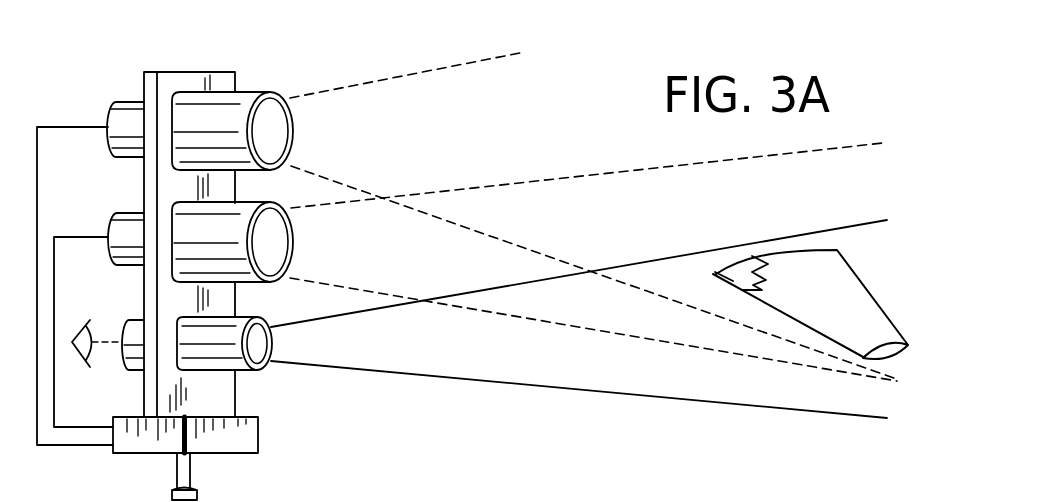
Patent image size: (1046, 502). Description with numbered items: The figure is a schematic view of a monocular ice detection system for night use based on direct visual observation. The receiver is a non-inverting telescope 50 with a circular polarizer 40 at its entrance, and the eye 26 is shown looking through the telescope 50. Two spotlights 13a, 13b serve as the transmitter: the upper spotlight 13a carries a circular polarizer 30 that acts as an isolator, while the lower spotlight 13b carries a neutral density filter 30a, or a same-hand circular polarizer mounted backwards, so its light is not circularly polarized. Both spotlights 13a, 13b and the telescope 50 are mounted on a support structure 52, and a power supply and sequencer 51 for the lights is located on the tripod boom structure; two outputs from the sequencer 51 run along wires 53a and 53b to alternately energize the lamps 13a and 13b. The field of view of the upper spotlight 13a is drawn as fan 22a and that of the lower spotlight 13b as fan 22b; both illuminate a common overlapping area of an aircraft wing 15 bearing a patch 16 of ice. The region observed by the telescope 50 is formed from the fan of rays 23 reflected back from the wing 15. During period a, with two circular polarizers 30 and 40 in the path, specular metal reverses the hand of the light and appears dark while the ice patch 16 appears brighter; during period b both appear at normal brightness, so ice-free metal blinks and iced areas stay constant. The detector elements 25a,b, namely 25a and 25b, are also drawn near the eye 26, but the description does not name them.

The support structure 52 is at (170, 64).
The upper spotlight 13a is at (125, 110).
The lower spotlight 13b is at (108, 247).
The wire 53a is at (40, 130).
The wire 53b is at (67, 237).
The eye 26 is at (85, 324).
The photodetectors 25a,b is at (107, 365).
The first photodetector 25a is at (107, 365).
The second photodetector 25b is at (116, 344).
The circular polarizer isolator 30 is at (270, 100).
The neutral density filter 30a is at (287, 250).
The circular polarizer 40 is at (256, 328).
The non-inverting telescope 50 is at (240, 372).
The power supply and sequencer 51 is at (253, 425).
The field of view of upper spotlight 22a is at (357, 83).
The field of view of lower spotlight 22b is at (487, 187).
The field of view 23 is at (512, 388).
The aircraft wing 15 is at (863, 287).
The patch of ice 16 is at (713, 273).